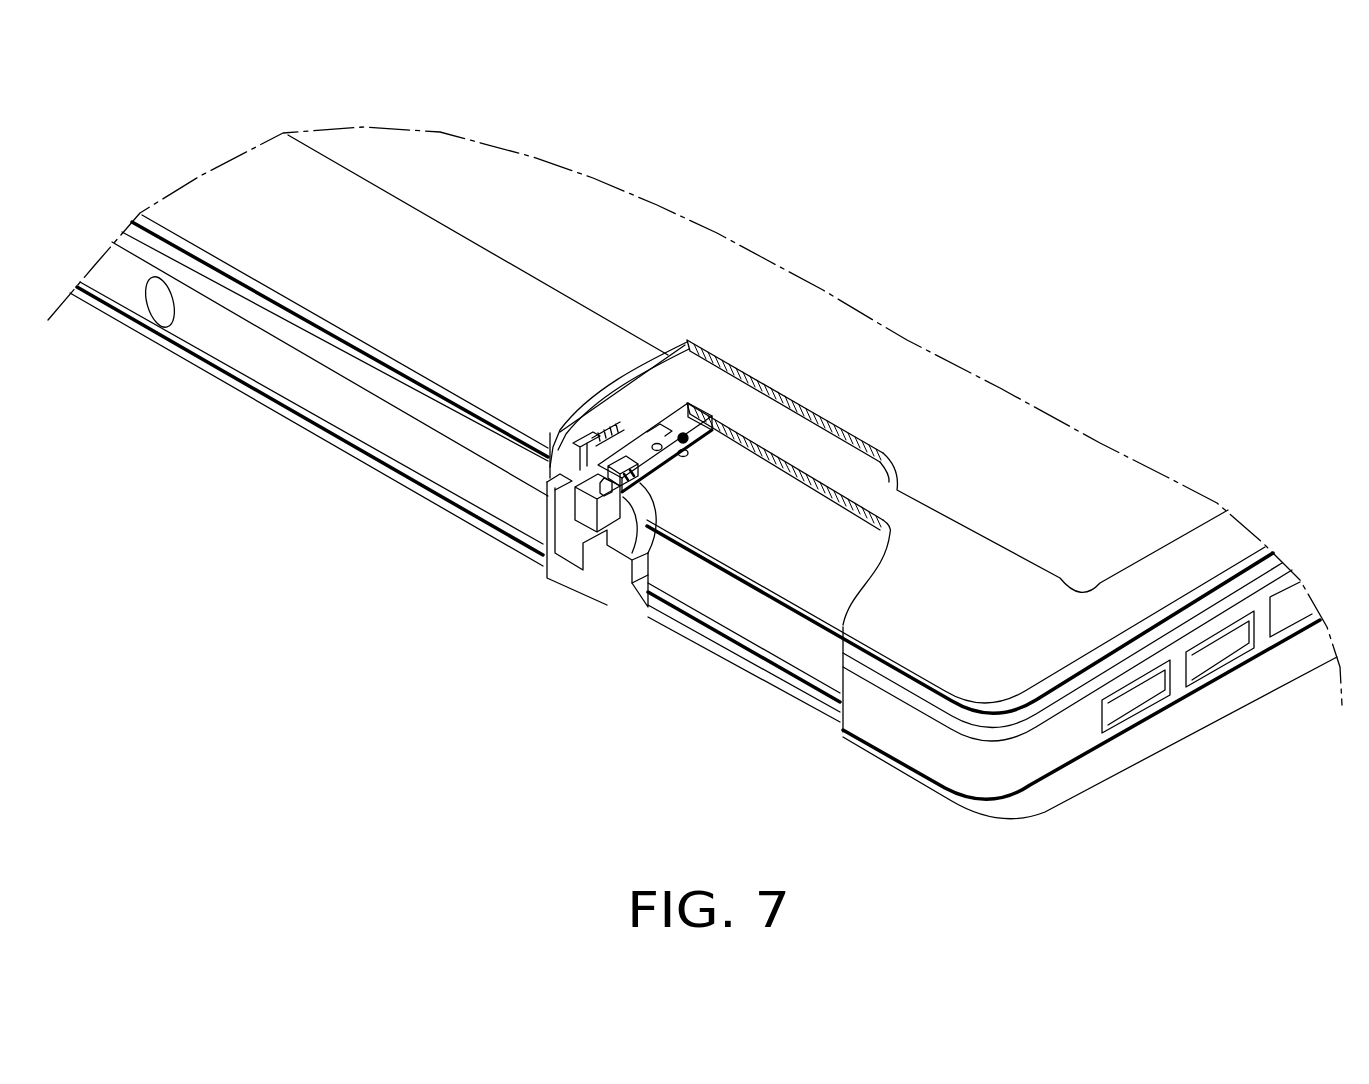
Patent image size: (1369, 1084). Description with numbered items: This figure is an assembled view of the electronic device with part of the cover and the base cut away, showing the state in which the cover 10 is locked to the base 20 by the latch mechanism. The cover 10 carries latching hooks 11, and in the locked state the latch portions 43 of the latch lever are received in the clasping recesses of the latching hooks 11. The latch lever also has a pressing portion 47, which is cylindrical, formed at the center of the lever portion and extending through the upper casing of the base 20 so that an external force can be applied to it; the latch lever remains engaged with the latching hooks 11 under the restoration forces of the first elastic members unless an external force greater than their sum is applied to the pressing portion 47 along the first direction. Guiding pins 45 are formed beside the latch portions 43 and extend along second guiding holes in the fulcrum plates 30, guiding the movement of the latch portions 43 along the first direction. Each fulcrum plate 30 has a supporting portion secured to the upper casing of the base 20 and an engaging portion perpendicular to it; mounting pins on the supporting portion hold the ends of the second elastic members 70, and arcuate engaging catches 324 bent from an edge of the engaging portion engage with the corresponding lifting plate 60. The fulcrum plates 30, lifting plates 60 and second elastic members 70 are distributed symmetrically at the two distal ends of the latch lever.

The cover 10 is at (257, 201).
The base 20 is at (335, 397).
The pressing portion 47 is at (164, 310).
The latching hooks 11 is at (567, 490).
The fulcrum plates 30 is at (678, 438).
The arcuate engaging catches 324 is at (622, 477).
The latch portions 43 is at (604, 487).
The guiding pins 45 is at (633, 480).
The lifting plates 60 is at (593, 508).
The second elastic members 70 is at (690, 460).